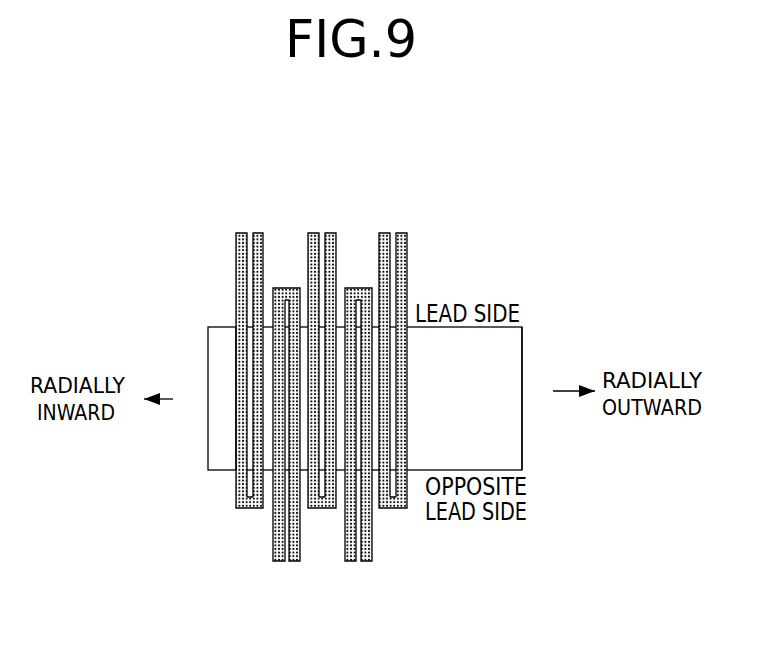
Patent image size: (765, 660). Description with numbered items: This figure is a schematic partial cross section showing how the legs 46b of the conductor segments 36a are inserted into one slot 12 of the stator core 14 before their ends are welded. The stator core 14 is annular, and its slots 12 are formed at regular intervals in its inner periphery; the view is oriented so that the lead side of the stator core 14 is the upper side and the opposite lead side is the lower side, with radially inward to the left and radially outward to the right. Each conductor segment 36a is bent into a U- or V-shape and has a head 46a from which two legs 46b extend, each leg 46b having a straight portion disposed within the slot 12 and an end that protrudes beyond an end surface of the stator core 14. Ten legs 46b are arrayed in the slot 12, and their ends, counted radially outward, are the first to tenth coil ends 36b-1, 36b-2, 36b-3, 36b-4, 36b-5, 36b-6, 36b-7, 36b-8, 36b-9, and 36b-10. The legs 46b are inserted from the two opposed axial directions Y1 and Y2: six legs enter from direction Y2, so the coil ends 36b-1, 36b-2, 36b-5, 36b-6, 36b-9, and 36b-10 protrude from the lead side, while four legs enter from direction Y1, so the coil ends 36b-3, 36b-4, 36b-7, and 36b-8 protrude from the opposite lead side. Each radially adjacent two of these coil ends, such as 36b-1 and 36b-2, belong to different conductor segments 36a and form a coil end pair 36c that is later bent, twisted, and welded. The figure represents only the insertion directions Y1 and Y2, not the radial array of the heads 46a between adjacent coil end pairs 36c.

The slot 12 is at (234, 318).
The stator core 14 is at (523, 338).
The conductor segment 36a is at (298, 288).
The first coil end 36b-1 is at (240, 233).
The second coil end 36b-2 is at (257, 233).
The third coil end 36b-3 is at (278, 561).
The fourth coil end 36b-4 is at (295, 561).
The fifth coil end 36b-5 is at (313, 233).
The sixth coil end 36b-6 is at (330, 233).
The seventh coil end 36b-7 is at (352, 561).
The eighth coil end 36b-8 is at (368, 561).
The ninth coil end 36b-9 is at (384, 233).
The tenth coil end 36b-10 is at (402, 233).
The coil end pair 36c is at (171, 329).
The head 46a is at (323, 512).
The leg 46b is at (236, 358).
The direction Y1 is at (285, 282).
The direction Y2 is at (250, 512).